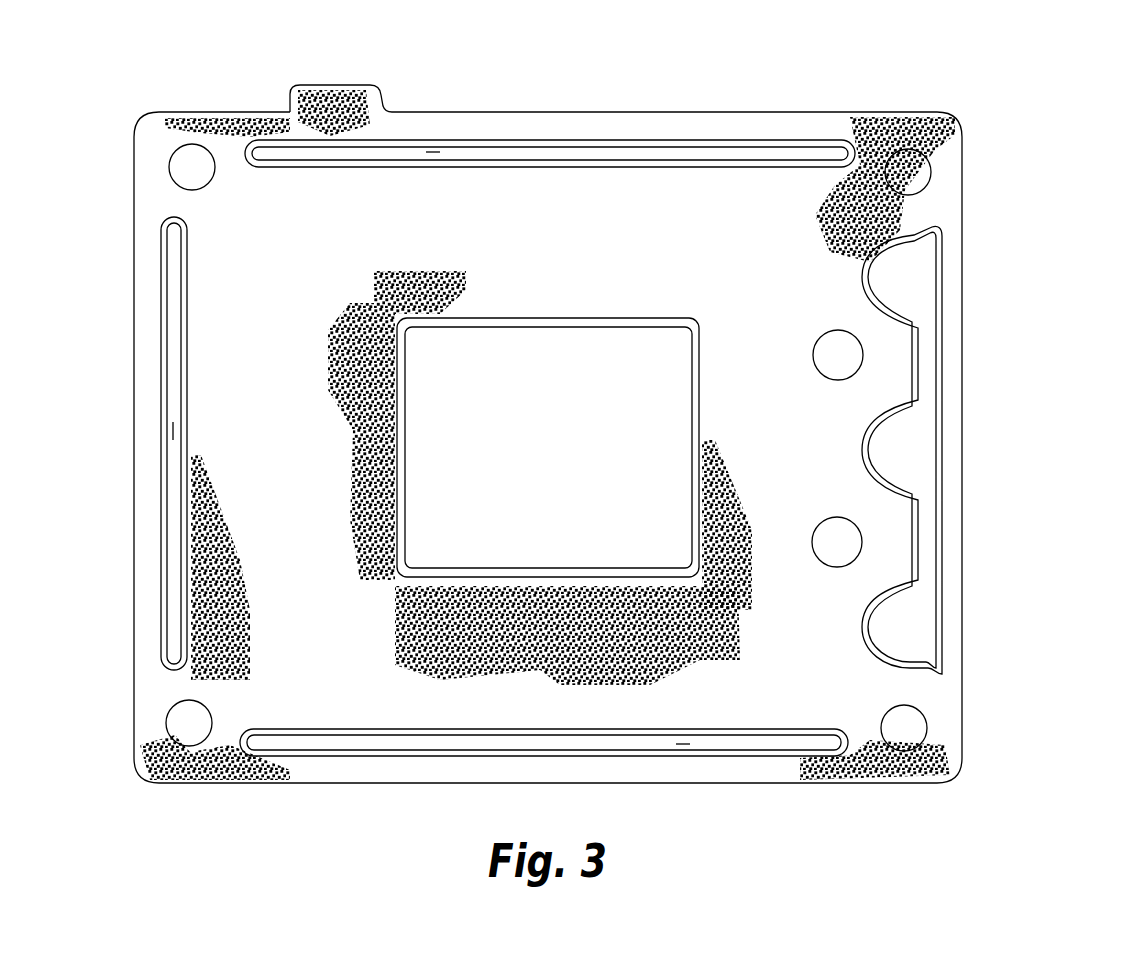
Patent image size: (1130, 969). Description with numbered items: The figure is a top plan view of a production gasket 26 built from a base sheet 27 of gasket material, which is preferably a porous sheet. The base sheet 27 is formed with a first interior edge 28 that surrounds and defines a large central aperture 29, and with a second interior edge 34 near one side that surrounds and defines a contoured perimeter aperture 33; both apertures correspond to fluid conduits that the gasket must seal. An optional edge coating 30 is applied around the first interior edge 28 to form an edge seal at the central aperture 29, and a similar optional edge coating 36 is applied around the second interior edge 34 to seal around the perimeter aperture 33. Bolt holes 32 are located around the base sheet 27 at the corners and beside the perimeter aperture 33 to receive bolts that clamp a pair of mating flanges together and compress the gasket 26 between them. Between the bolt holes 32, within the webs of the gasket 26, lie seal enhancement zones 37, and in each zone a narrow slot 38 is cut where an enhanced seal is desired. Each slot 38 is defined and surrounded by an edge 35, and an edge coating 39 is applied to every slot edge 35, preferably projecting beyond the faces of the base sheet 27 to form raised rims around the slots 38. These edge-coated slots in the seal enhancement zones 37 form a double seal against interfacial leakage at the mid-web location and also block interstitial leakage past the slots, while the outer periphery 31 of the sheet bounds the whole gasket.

The gasket 26 is at (624, 408).
The base sheet 27 is at (760, 236).
The first interior edge 28 is at (540, 318).
The central aperture 29 is at (536, 454).
The edge coating 30 is at (598, 327).
The outer peripheral edge 31 is at (503, 112).
The bolt holes 32 is at (170, 159).
The perimeter aperture 33 is at (901, 461).
The second interior edge 34 is at (943, 300).
The slot edge 35 is at (690, 140).
The edge coating 36 is at (943, 408).
The seal enhancement zones 37 is at (587, 136).
The narrow slot 38 is at (433, 153).
The edge coating 39 is at (408, 146).